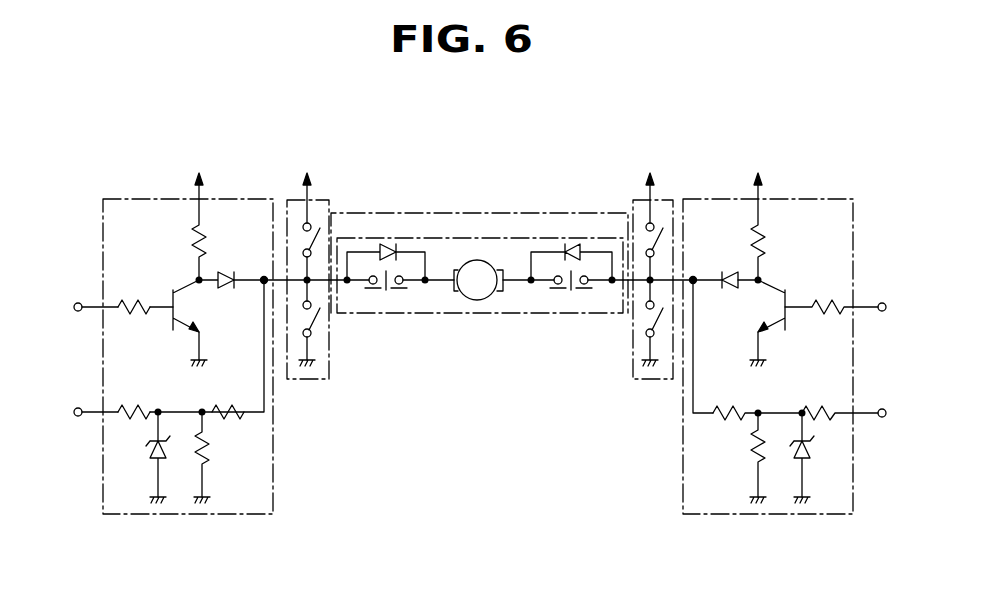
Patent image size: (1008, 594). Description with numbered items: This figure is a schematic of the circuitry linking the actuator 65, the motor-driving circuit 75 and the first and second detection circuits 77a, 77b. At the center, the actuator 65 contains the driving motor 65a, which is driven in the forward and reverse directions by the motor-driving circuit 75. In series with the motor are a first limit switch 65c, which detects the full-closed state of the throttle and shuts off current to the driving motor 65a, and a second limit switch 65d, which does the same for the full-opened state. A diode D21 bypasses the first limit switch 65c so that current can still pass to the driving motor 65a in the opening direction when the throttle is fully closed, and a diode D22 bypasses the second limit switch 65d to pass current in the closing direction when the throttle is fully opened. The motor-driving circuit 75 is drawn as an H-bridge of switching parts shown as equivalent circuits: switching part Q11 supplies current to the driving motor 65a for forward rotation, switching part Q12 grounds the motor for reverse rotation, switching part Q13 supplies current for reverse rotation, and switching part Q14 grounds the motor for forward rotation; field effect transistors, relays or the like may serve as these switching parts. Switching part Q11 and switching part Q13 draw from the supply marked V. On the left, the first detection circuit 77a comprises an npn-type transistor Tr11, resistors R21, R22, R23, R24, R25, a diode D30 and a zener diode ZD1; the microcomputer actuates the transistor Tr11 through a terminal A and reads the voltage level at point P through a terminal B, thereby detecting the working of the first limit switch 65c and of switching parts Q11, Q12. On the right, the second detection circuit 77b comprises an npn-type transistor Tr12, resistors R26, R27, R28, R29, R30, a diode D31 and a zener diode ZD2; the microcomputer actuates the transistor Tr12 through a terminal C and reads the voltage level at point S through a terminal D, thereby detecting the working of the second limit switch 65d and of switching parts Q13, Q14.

The first detection circuit 77a is at (226, 199).
The second detection circuit 77b is at (811, 199).
The motor-driving circuit 75 is at (462, 212).
The actuator 65 is at (507, 314).
The driving motor 65a is at (479, 260).
The first limit switch 65c is at (389, 293).
The second limit switch 65d is at (571, 293).
The diode D21 is at (390, 250).
The diode D22 is at (573, 250).
The diode D30 is at (227, 271).
The diode D31 is at (727, 290).
The switching part Q11 is at (306, 248).
The switching part Q12 is at (321, 330).
The switching part Q13 is at (645, 248).
The switching part Q14 is at (640, 330).
The resistor R21 is at (193, 240).
The resistor R22 is at (134, 310).
The resistor R23 is at (238, 414).
The resistor R24 is at (205, 452).
The resistor R25 is at (143, 408).
The resistor R26 is at (756, 243).
The resistor R27 is at (820, 313).
The resistor R28 is at (718, 408).
The resistor R29 is at (757, 447).
The resistor R30 is at (814, 408).
The npn-type transistor Tr11 is at (192, 302).
The npn-type transistor Tr12 is at (787, 297).
The zener diode ZD1 is at (152, 445).
The zener diode ZD2 is at (808, 450).
The terminal A is at (78, 302).
The terminal B is at (78, 407).
The terminal C is at (883, 302).
The terminal D is at (883, 408).
The point P is at (264, 276).
The point S is at (694, 277).
The supply voltage V is at (320, 159).